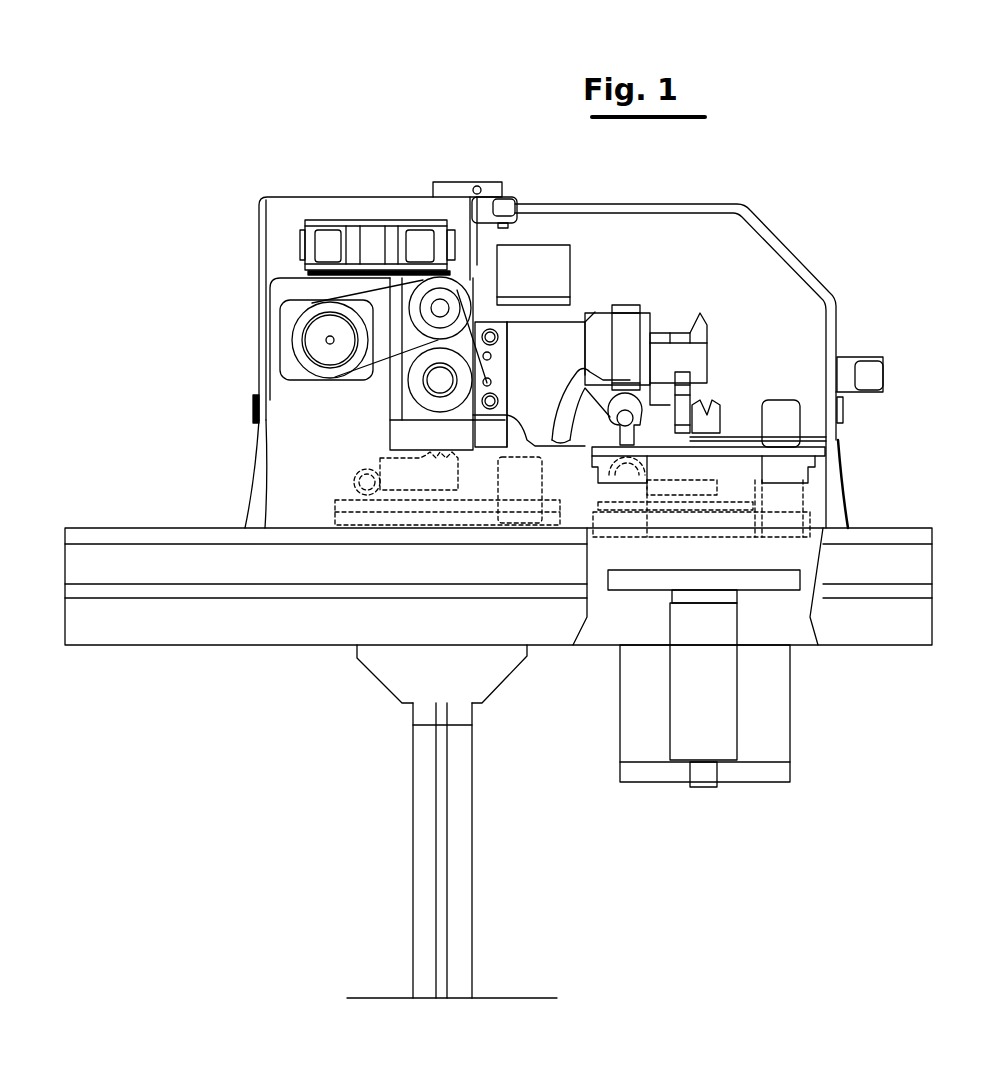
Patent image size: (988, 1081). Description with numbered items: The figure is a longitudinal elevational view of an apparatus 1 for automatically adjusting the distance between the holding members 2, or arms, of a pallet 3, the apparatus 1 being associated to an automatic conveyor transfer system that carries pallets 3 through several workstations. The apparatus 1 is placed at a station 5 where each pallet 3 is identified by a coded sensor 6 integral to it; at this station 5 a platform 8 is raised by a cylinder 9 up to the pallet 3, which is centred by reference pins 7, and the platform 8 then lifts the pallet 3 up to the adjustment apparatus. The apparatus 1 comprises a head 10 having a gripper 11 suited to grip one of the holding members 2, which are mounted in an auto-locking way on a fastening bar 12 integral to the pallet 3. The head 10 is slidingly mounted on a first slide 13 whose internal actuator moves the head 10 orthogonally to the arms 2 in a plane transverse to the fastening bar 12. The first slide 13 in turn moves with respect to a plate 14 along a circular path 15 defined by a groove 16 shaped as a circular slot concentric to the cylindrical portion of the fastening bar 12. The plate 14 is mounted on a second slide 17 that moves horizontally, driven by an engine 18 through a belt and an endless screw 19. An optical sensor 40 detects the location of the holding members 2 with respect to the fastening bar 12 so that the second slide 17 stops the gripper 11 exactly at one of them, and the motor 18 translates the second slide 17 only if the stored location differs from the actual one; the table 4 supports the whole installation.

The apparatus 1 is at (326, 172).
The holding members 2 is at (717, 408).
The pallet 3 is at (775, 512).
The table 4 is at (158, 523).
The station 5 is at (710, 790).
The coded sensor 6 is at (778, 408).
The reference pins 7 is at (699, 546).
The platform 8 is at (755, 582).
The cylinder 9 is at (688, 665).
The head 10 is at (657, 405).
The gripper 11 is at (686, 378).
The fastening bar 12 is at (356, 478).
The first slide 13 is at (630, 312).
The plate 14 is at (553, 343).
The path 15 is at (575, 385).
The groove 16 is at (568, 447).
The second slide 17 is at (507, 330).
The engine 18 is at (305, 328).
The endless screw 19 is at (435, 222).
The optical sensor 40 is at (660, 348).